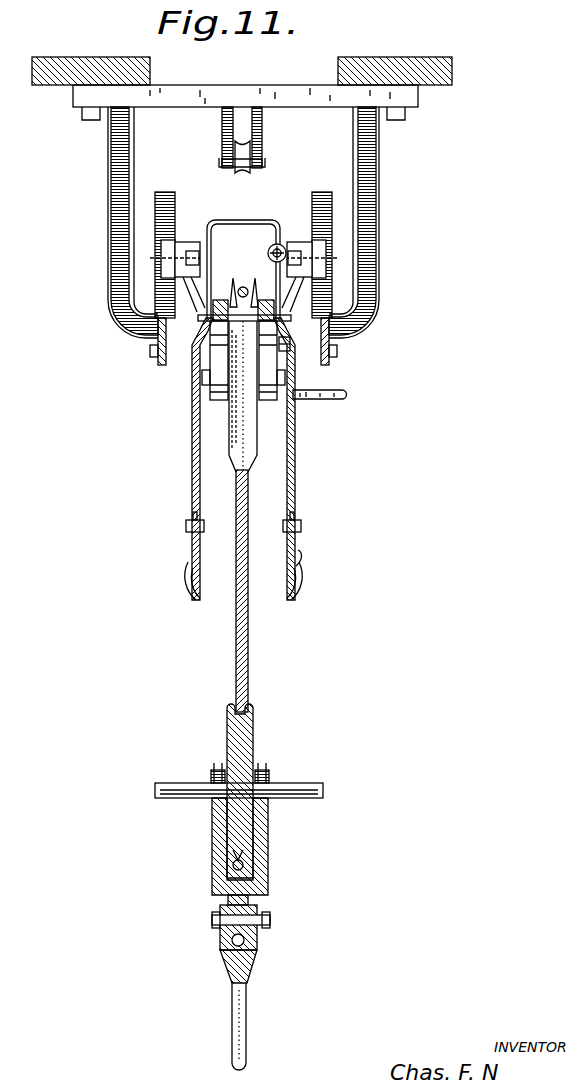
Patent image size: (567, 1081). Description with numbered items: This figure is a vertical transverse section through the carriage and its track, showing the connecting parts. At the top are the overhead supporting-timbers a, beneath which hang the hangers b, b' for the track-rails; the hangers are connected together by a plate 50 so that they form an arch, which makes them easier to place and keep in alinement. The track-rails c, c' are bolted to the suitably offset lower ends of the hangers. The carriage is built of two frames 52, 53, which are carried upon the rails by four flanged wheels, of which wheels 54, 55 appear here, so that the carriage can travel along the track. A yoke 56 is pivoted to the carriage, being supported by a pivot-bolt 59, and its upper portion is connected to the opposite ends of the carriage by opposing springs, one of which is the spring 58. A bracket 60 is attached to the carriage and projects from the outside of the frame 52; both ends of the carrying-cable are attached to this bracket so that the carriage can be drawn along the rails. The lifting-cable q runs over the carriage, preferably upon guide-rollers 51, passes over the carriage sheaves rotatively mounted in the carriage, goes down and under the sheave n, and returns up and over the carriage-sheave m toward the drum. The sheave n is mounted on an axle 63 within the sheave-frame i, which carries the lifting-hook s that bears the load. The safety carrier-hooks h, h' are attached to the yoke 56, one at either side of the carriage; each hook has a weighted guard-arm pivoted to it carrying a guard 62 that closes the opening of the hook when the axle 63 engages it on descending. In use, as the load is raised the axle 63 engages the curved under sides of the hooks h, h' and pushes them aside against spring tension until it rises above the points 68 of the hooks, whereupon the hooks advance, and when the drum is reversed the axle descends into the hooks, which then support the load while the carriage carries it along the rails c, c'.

The supporting-timbers a is at (453, 79).
The plate 50 is at (305, 108).
The hanger b is at (372, 222).
The hanger b' is at (108, 222).
The guide-rollers 51 is at (250, 173).
The flanged wheel 55 is at (152, 226).
The flanged wheel 54 is at (333, 283).
The track-rail c is at (354, 351).
The track-rail c' is at (124, 358).
The yoke 56 is at (240, 222).
The spring 58 is at (281, 244).
The carriage frame 53 is at (216, 401).
The carriage frame 52 is at (272, 401).
The pivot-bolt 59 is at (300, 342).
The bracket 60 is at (322, 401).
The carriage-sheave m is at (257, 473).
The lifting-cable q is at (249, 643).
The safety-hook h is at (303, 461).
The safety-hook h' is at (172, 461).
The guard 62 is at (301, 532).
The points of the hooks 68 is at (300, 567).
The sheave n is at (254, 727).
The axle 63 is at (300, 783).
The sheave-frame i is at (268, 860).
The lifting-hook s is at (250, 996).